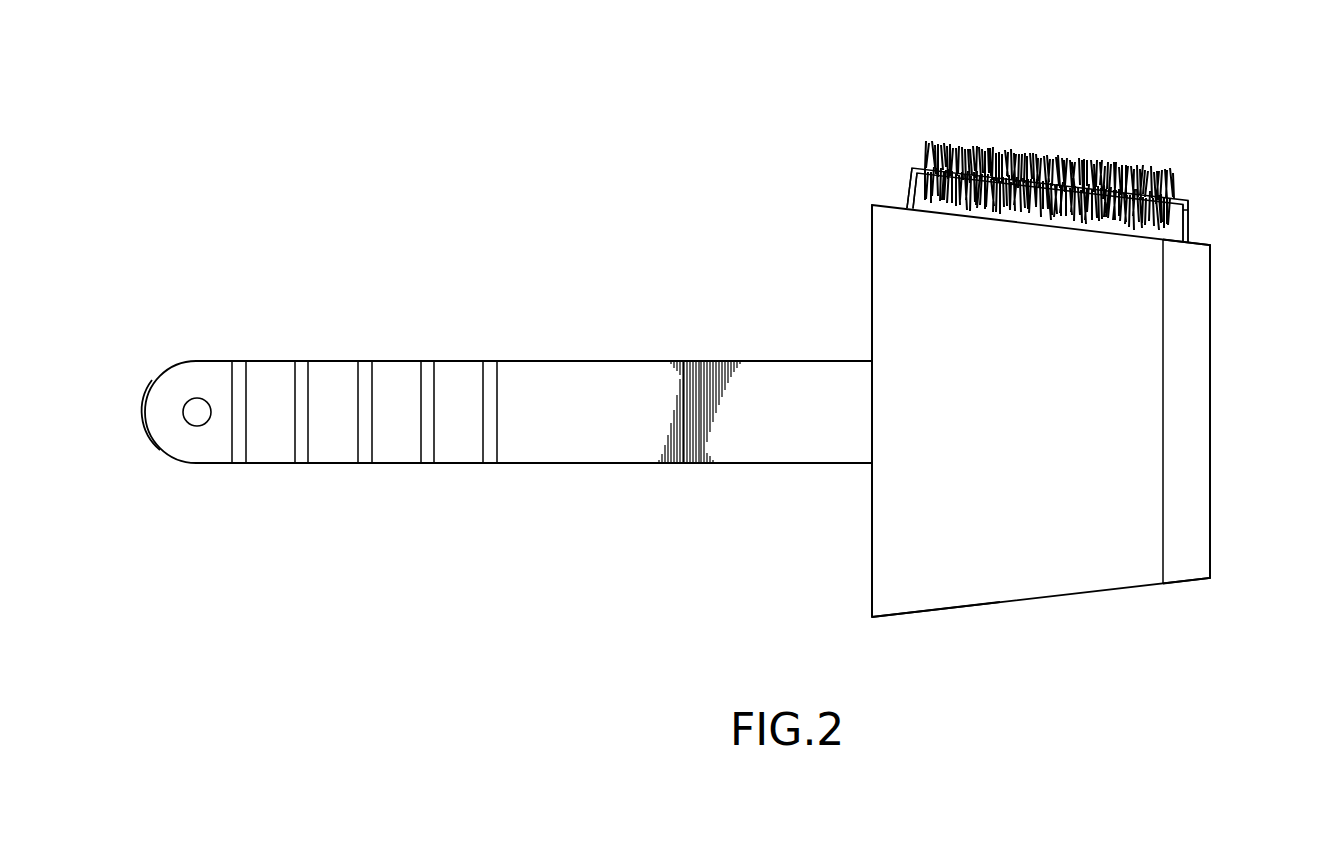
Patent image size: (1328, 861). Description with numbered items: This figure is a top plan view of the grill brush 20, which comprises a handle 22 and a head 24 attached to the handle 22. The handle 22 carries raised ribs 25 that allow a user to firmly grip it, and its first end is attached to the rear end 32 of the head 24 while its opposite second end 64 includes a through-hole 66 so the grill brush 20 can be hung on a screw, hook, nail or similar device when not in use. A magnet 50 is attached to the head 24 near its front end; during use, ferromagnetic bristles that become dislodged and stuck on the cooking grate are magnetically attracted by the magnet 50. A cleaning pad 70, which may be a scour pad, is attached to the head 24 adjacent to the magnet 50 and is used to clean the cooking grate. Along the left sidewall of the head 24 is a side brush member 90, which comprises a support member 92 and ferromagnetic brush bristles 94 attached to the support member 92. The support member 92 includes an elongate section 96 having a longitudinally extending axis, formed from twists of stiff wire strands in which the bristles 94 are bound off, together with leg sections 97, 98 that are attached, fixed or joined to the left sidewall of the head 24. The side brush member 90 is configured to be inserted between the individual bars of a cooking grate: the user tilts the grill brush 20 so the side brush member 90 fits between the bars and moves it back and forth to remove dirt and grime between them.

The grill brush 20 is at (712, 137).
The handle 22 is at (600, 361).
The head 24 is at (1022, 622).
The raised ribs 25 is at (491, 368).
The rear end 32 is at (872, 530).
The magnet 50 is at (1193, 464).
The second end 64 is at (150, 433).
The through-hole 66 is at (196, 406).
The cleaning pad 70 is at (897, 600).
The side brush member 90 is at (1205, 206).
The support member 92 is at (910, 169).
The ferromagnetic brush bristles 94 is at (1125, 168).
The elongate section 96 is at (1184, 199).
The leg section 97 is at (1188, 215).
The leg section 98 is at (906, 197).